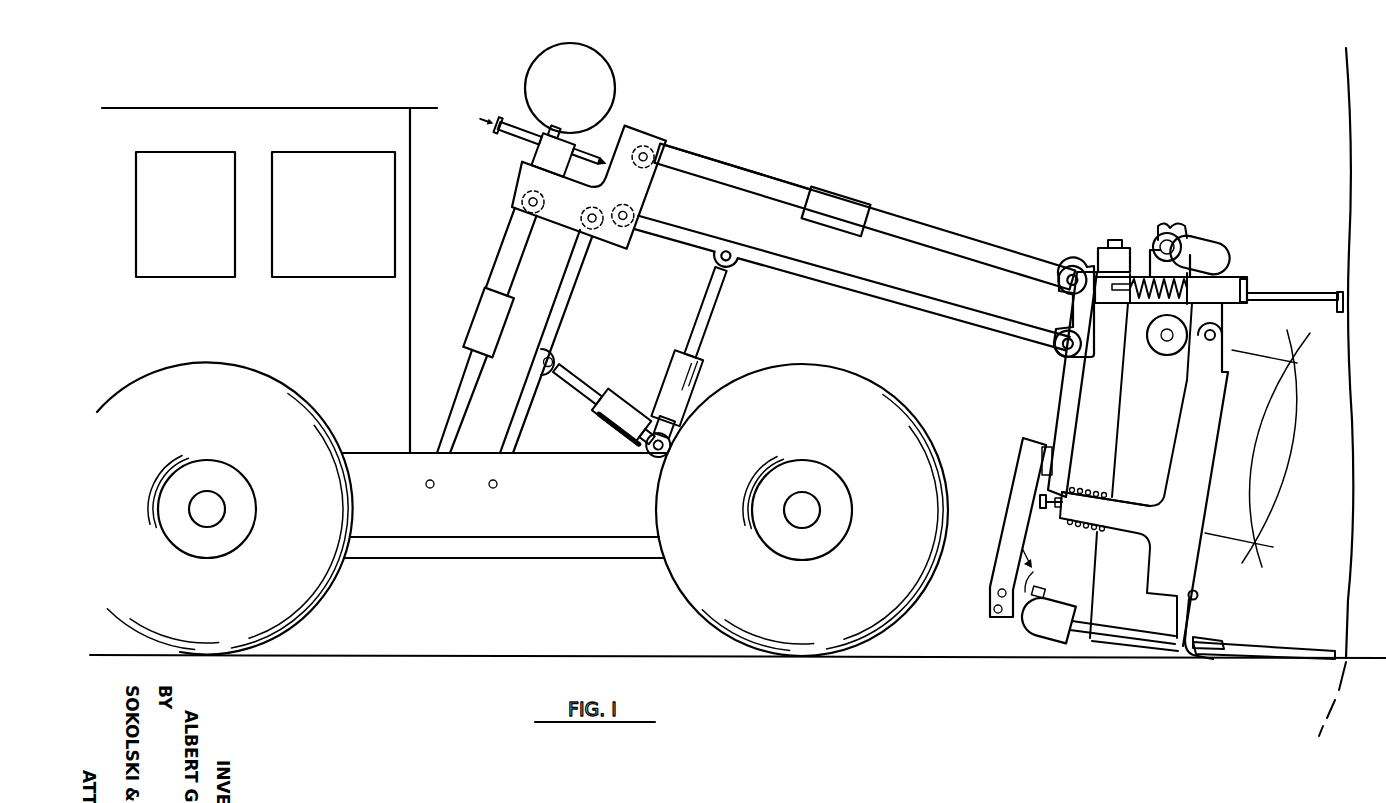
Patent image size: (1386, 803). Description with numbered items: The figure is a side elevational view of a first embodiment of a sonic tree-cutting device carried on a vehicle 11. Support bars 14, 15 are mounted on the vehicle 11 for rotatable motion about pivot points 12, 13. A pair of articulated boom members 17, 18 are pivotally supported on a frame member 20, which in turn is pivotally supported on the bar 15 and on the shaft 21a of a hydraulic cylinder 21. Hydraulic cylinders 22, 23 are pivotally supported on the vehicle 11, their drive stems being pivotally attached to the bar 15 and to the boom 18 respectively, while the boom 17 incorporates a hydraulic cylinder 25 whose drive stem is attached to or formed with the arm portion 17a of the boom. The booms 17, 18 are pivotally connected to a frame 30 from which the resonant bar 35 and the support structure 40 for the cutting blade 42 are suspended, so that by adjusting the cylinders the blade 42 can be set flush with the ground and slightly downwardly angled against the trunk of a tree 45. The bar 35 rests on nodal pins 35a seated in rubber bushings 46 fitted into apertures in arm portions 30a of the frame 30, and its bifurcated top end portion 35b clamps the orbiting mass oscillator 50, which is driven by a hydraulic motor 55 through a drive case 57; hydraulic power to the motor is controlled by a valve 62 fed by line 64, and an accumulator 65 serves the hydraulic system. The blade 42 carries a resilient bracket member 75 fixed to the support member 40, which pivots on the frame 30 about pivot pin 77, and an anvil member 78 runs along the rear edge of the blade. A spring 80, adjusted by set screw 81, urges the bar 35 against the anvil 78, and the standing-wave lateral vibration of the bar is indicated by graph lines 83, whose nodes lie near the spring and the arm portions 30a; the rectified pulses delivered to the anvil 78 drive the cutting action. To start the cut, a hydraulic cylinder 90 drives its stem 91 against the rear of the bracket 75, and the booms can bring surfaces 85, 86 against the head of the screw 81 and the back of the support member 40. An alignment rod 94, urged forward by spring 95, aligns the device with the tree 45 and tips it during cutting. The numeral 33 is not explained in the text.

The vehicle 11 is at (492, 550).
The pivot point 12 is at (434, 488).
The pivot point 13 is at (499, 486).
The support bar 14 is at (466, 378).
The support bar 15 is at (530, 388).
The boom member 17 is at (905, 226).
The arm portion 17a is at (710, 173).
The boom member 18 is at (855, 279).
The frame member 20 is at (622, 128).
The hydraulic cylinder 21 is at (487, 306).
The shaft 21a is at (517, 247).
The hydraulic cylinder 22 is at (632, 405).
The hydraulic cylinder 23 is at (672, 383).
The hydraulic cylinder 25 is at (836, 204).
The frame 30 is at (1064, 359).
The arm portion 30a is at (1148, 313).
The fitting 33 is at (1115, 234).
The resonant bar 35 is at (1170, 410).
The nodal pin 35a is at (1164, 341).
The bifurcated top end portion 35b is at (1176, 222).
The support structure 40 is at (1195, 453).
The cutting blade 42 is at (1278, 649).
The tree 45 is at (1348, 115).
The rubber bushing 46 is at (1183, 347).
The orbiting mass oscillator 50 is at (1157, 240).
The hydraulic motor 55 is at (1213, 242).
The drive case 57 is at (1220, 256).
The hydraulic valve 62 is at (1098, 258).
The line 64 is at (582, 158).
The accumulator 65 is at (593, 73).
The resilient bracket member 75 is at (1197, 592).
The pivot pin 77 is at (1216, 335).
The anvil member 78 is at (1212, 636).
The spring 80 is at (1083, 529).
The set screw 81 is at (1043, 510).
The graph lines 83 is at (1252, 447).
The surface 85 is at (1022, 490).
The surface 86 is at (1066, 489).
The hydraulic cylinder 90 is at (1030, 620).
The drive stem 91 is at (1108, 627).
The alignment rod 94 is at (1290, 294).
The spring 95 is at (1152, 292).